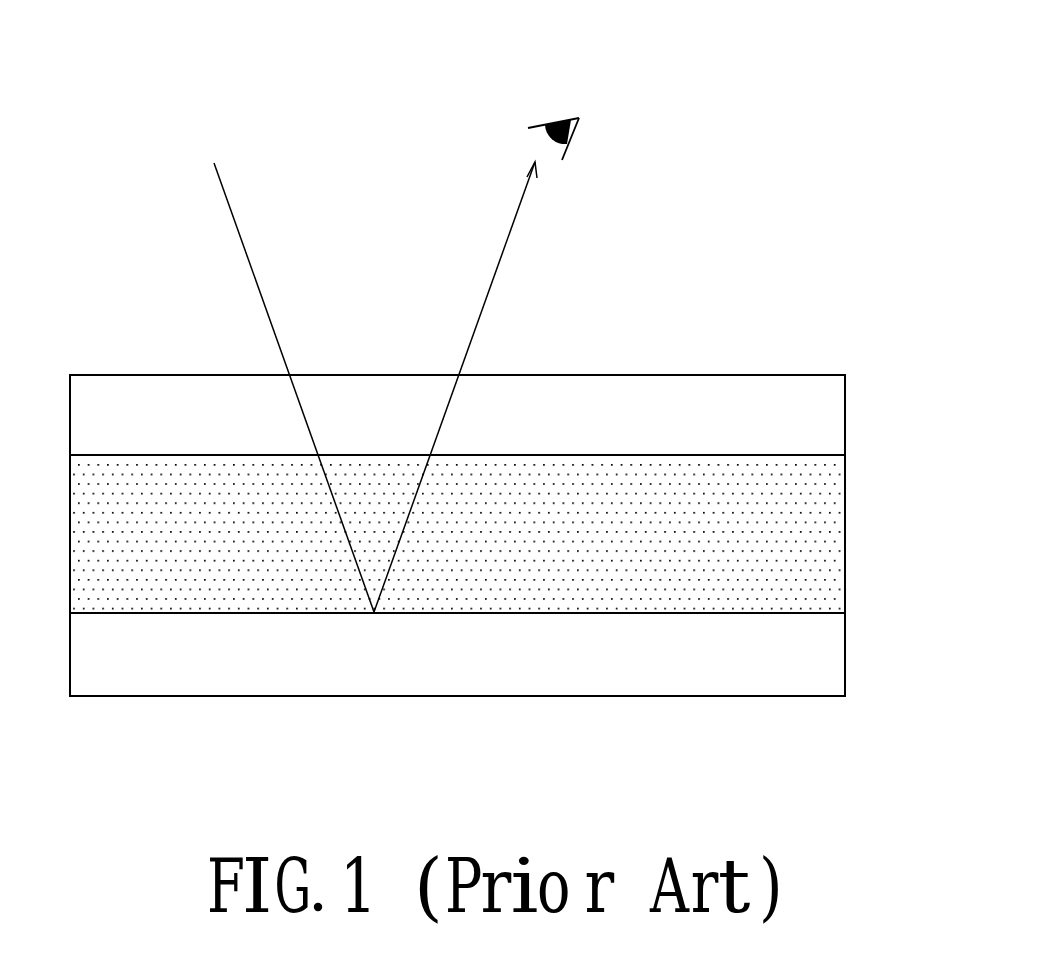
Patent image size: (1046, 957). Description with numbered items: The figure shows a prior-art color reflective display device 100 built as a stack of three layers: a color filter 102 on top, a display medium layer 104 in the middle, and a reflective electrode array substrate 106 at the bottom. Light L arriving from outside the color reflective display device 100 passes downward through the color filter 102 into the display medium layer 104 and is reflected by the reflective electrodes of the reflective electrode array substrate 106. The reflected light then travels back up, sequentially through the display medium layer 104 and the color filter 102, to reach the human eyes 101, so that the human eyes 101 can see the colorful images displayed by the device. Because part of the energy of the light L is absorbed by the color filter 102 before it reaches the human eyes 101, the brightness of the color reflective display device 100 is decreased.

The color reflective display device 100 is at (918, 783).
The human eyes 101 is at (556, 105).
The color filter 102 is at (835, 420).
The display medium layer 104 is at (835, 535).
The reflective electrode array substrate 106 is at (835, 662).
The light L is at (262, 303).